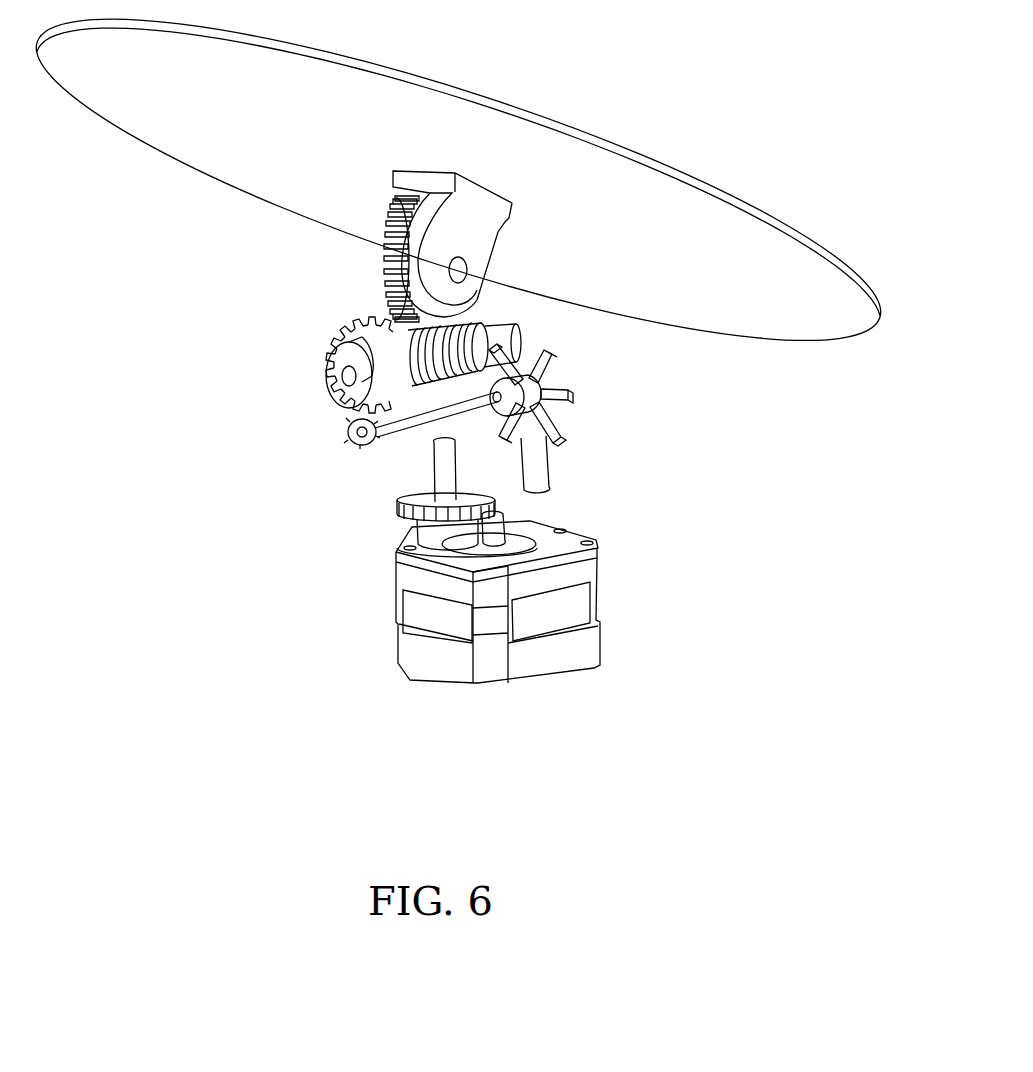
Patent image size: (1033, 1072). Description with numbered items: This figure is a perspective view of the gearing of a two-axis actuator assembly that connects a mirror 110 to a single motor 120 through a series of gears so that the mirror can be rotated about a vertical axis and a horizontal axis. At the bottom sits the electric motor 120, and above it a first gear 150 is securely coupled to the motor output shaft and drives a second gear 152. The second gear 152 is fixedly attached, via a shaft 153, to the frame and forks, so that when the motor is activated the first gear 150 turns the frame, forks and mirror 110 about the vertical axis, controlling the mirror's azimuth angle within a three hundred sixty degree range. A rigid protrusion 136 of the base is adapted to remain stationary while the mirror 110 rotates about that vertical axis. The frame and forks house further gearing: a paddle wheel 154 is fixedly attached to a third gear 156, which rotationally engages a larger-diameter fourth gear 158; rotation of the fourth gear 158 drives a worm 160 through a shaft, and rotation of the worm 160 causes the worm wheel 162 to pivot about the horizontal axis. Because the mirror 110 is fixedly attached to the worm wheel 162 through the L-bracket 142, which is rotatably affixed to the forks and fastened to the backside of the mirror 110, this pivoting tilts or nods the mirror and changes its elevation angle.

The mirror 110 is at (628, 150).
The motor 120 is at (605, 636).
The rigid protrusion 136 is at (542, 465).
The L-bracket 142 is at (488, 238).
The first gear 150 is at (510, 510).
The second gear 152 is at (393, 513).
The shaft 153 is at (433, 469).
The paddle wheel 154 is at (538, 374).
The third gear 156 is at (377, 444).
The fourth gear 158 is at (342, 332).
The worm 160 is at (477, 331).
The worm wheel 162 is at (380, 262).